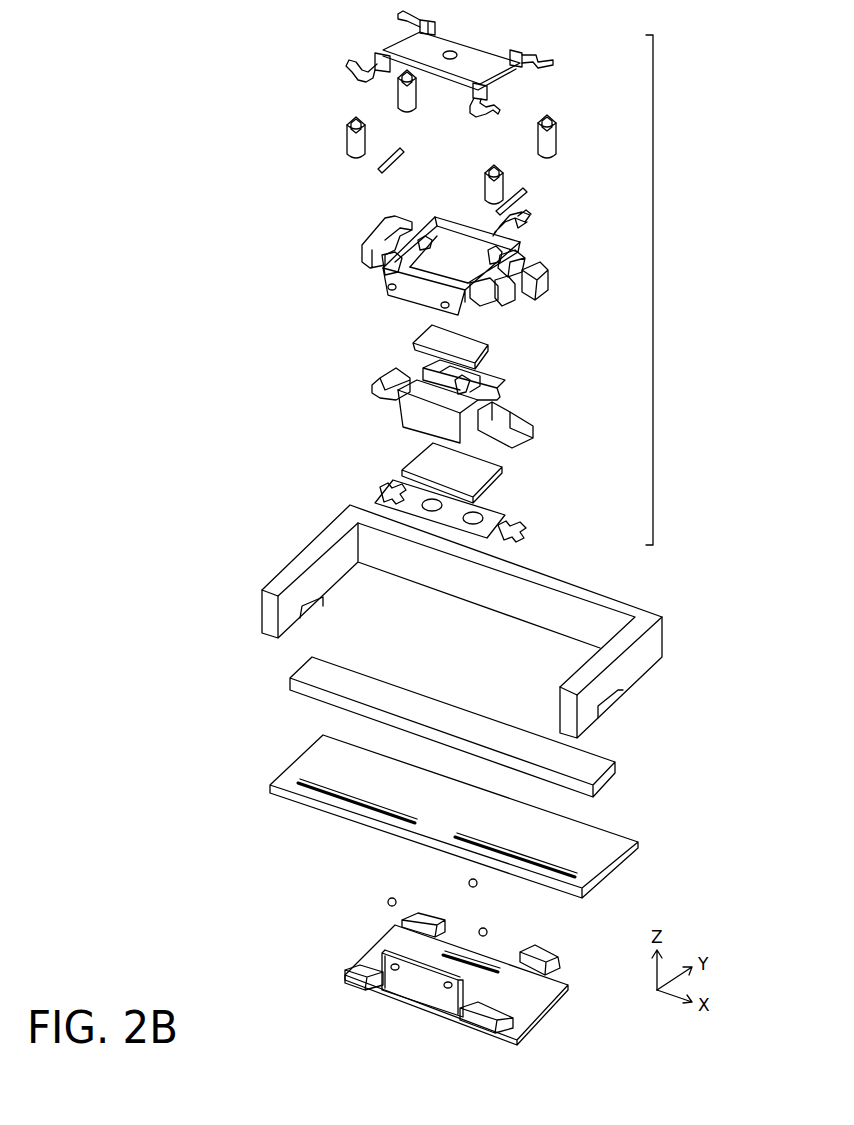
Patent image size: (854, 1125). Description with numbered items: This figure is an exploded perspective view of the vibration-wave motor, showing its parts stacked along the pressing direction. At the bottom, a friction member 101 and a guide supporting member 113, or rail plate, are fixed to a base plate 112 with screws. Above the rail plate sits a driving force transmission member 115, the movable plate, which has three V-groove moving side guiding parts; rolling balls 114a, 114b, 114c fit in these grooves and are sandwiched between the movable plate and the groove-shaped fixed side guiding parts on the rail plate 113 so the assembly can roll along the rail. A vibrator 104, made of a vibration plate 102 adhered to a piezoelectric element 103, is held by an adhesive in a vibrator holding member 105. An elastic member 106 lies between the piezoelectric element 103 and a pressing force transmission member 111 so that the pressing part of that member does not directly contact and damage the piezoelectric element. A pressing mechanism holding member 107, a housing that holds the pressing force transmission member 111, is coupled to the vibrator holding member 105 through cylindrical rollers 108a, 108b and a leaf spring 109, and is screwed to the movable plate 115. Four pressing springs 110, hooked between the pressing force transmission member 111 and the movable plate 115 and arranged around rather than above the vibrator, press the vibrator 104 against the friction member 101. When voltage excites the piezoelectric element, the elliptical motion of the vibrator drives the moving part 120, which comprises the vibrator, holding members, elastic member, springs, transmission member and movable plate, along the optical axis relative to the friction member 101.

The friction member 101 is at (306, 666).
The vibration plate 102 is at (380, 490).
The piezoelectric element 103 is at (415, 457).
The vibrator 104 is at (401, 486).
The vibrator holding member 105 is at (390, 384).
The elastic member 106 is at (430, 332).
The pressing mechanism holding member 107 is at (372, 238).
The cylindrical roller 108a is at (380, 170).
The cylindrical roller 108b is at (527, 192).
The leaf spring 109 is at (531, 231).
The pressing spring 110 is at (395, 95).
The pressing force transmission member 111 is at (520, 57).
The base plate 112 is at (292, 556).
The guide supporting member 113 is at (306, 757).
The rolling ball 114a is at (388, 900).
The rolling ball 114b is at (469, 882).
The rolling ball 114c is at (487, 930).
The driving force transmission member 115 is at (378, 950).
The moving part 120 is at (653, 283).